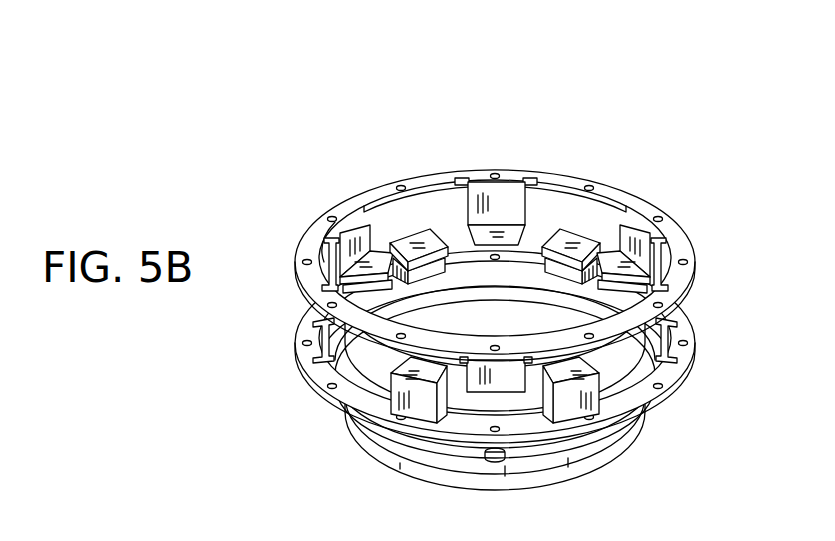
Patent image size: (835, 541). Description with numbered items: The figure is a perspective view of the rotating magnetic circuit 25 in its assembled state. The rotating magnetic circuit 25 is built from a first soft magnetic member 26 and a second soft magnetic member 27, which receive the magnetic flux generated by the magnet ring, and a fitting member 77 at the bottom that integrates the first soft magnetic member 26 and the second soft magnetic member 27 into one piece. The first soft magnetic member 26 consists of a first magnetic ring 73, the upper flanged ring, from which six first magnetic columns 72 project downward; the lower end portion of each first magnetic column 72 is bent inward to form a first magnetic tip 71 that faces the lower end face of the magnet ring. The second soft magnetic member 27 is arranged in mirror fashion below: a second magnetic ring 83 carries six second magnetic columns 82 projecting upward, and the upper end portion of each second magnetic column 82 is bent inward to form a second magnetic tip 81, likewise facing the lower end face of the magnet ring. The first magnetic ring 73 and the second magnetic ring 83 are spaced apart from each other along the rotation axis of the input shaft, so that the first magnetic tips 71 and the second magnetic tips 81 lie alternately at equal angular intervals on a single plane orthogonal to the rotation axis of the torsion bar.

The rotating magnetic circuit 25 is at (330, 173).
The first soft magnetic member 26 is at (519, 162).
The second soft magnetic member 27 is at (294, 321).
The first magnetic tips 71 is at (621, 223).
The first magnetic columns 72 is at (640, 230).
The first magnetic ring 73 is at (668, 225).
The fitting member 77 is at (382, 471).
The second magnetic tips 81 is at (581, 234).
The second magnetic columns 82 is at (561, 283).
The second magnetic ring 83 is at (305, 352).